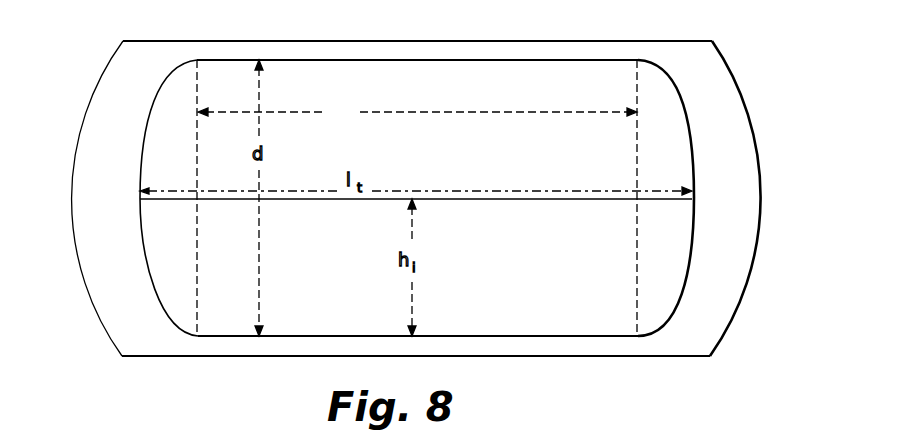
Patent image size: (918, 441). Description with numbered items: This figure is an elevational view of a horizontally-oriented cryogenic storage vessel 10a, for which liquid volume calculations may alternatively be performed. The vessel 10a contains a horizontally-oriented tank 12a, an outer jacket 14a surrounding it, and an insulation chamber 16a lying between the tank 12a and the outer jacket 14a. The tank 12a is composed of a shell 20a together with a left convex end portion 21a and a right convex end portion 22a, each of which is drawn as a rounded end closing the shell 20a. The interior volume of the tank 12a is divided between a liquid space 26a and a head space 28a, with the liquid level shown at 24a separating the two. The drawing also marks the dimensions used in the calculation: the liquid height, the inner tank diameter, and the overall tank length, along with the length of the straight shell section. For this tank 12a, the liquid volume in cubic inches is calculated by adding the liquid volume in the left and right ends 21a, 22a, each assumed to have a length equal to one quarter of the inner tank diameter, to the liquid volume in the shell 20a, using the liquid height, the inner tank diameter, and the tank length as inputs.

The vessel 10a is at (768, 99).
The tank 12a is at (176, 118).
The outer jacket 14a is at (362, 42).
The insulation chamber 16a is at (490, 51).
The shell 20a is at (199, 336).
The left convex end portion 21a is at (178, 253).
The right convex end portion 22a is at (653, 310).
The liquid level 24a is at (468, 201).
The liquid space 26a is at (616, 245).
The head space 28a is at (518, 114).